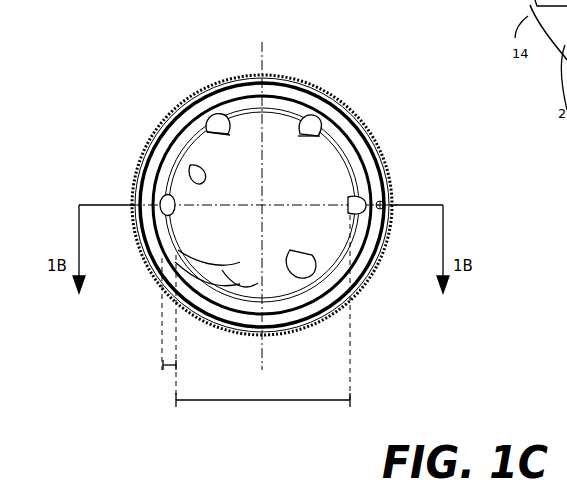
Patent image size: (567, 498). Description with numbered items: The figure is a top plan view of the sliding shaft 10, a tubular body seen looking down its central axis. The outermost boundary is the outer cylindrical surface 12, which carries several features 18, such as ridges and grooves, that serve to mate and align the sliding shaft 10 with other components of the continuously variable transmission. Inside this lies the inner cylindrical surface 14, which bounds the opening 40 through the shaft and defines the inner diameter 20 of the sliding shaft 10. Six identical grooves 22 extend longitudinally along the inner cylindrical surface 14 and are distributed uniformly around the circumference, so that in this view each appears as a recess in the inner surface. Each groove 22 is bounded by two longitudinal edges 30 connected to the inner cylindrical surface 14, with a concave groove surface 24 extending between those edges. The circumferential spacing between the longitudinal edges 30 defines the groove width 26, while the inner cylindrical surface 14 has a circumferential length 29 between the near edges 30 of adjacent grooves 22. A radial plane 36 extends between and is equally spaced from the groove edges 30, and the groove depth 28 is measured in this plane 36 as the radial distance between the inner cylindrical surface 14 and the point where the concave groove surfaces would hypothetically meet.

The sliding shaft 10 is at (135, 72).
The outer cylindrical surface 12 is at (373, 283).
The inner cylindrical surface 14 is at (175, 160).
The features 18 is at (236, 78).
The inner diameter 20 is at (244, 400).
The grooves 22 is at (310, 282).
The groove surface 24 is at (302, 120).
The groove width 26 is at (225, 140).
The groove depth 28 is at (172, 368).
The circumferential length 29 is at (336, 164).
The longitudinal edges 30 is at (300, 264).
The radial plane 36 is at (170, 255).
The opening 40 is at (190, 318).